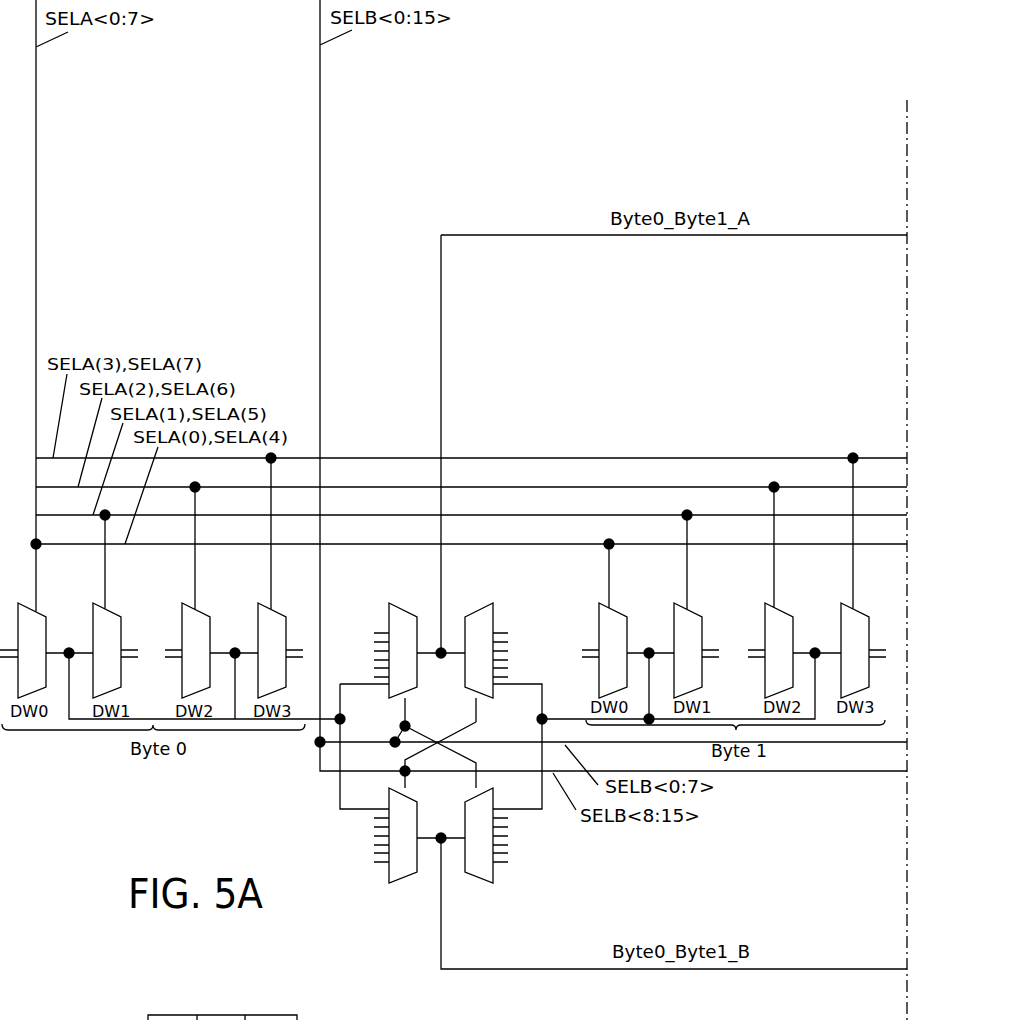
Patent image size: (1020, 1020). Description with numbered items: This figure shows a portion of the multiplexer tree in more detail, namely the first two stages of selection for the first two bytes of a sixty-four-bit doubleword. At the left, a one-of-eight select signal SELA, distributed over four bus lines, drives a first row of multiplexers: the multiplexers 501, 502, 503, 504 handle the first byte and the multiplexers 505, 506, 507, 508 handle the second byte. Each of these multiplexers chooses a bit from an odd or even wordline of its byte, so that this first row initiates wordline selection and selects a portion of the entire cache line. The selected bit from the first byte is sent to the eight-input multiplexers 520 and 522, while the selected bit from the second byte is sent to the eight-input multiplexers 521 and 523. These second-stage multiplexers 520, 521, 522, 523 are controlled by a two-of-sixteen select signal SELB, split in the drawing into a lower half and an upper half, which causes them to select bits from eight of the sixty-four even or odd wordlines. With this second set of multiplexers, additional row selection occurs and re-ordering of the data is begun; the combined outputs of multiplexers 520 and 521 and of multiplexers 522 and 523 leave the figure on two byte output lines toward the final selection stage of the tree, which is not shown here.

The multiplexer 501 is at (45, 613).
The multiplexer 502 is at (120, 613).
The multiplexer 503 is at (209, 613).
The multiplexer 504 is at (285, 613).
The multiplexer 505 is at (626, 613).
The multiplexer 506 is at (701, 613).
The multiplexer 507 is at (792, 613).
The multiplexer 508 is at (868, 613).
The 8-input multiplexer 520 is at (410, 612).
The 8-input multiplexer 521 is at (475, 612).
The 8-input multiplexer 522 is at (405, 878).
The 8-input multiplexer 523 is at (474, 878).